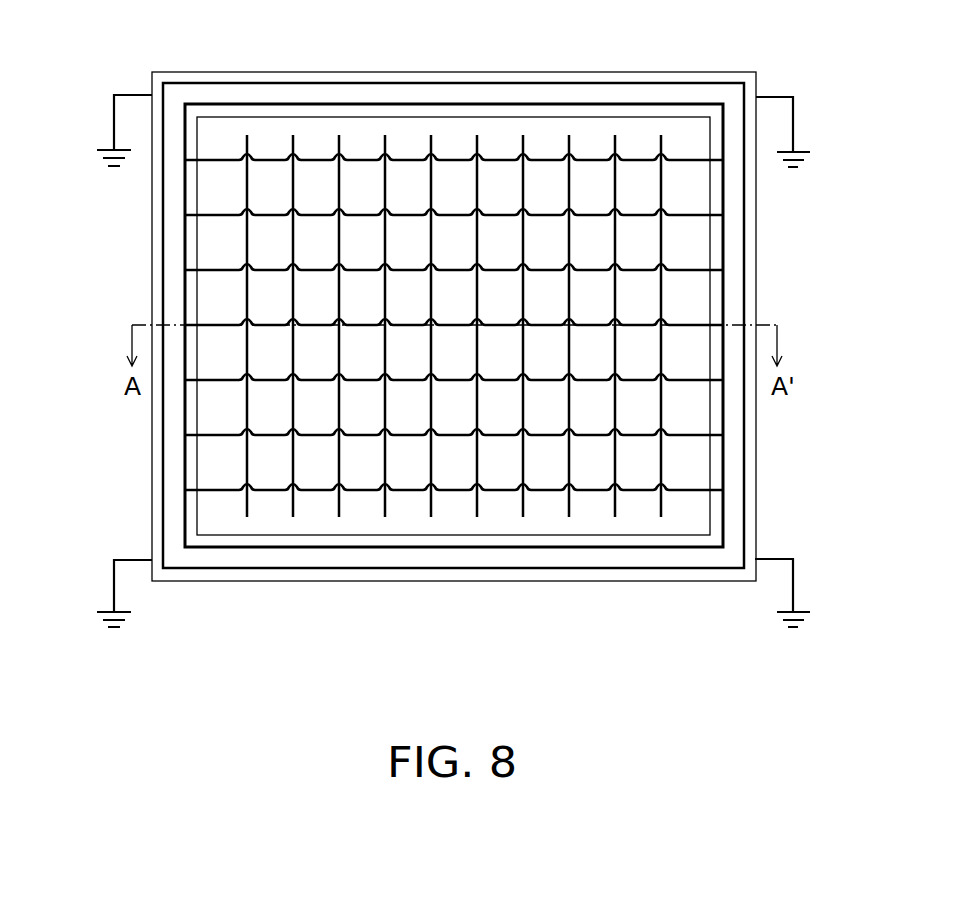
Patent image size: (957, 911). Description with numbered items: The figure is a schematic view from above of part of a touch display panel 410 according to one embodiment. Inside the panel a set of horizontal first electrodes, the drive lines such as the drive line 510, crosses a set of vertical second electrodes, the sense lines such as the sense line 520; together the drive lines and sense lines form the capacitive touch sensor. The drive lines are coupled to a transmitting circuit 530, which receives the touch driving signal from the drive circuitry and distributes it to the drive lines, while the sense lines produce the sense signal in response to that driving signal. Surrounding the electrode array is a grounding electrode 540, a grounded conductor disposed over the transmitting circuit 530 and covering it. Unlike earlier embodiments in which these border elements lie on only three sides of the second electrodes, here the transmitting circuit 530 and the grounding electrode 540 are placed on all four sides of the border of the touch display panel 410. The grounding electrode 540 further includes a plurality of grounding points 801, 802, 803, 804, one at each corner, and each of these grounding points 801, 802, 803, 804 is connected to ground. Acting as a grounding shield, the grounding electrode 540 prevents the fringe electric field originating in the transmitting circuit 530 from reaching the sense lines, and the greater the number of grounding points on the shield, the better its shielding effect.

The touch display panel 410 is at (790, 713).
The drive line 510 is at (700, 490).
The sense line 520 is at (245, 455).
The transmitting circuit 530 is at (453, 95).
The grounding electrode 540 is at (533, 73).
The grounding point 801 is at (90, 143).
The grounding point 802 is at (818, 145).
The grounding point 803 is at (90, 607).
The grounding point 804 is at (818, 607).